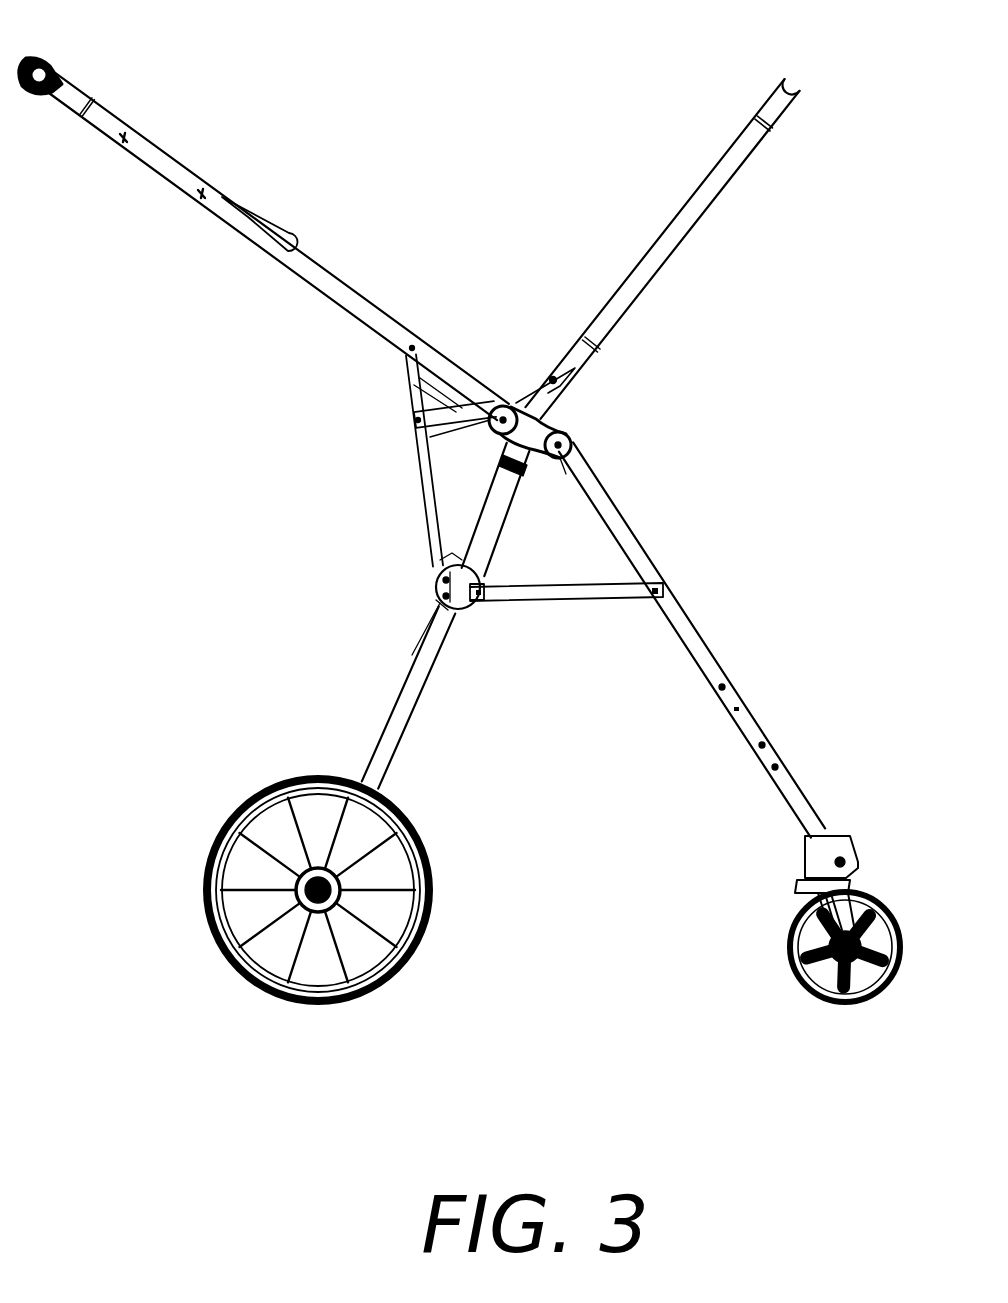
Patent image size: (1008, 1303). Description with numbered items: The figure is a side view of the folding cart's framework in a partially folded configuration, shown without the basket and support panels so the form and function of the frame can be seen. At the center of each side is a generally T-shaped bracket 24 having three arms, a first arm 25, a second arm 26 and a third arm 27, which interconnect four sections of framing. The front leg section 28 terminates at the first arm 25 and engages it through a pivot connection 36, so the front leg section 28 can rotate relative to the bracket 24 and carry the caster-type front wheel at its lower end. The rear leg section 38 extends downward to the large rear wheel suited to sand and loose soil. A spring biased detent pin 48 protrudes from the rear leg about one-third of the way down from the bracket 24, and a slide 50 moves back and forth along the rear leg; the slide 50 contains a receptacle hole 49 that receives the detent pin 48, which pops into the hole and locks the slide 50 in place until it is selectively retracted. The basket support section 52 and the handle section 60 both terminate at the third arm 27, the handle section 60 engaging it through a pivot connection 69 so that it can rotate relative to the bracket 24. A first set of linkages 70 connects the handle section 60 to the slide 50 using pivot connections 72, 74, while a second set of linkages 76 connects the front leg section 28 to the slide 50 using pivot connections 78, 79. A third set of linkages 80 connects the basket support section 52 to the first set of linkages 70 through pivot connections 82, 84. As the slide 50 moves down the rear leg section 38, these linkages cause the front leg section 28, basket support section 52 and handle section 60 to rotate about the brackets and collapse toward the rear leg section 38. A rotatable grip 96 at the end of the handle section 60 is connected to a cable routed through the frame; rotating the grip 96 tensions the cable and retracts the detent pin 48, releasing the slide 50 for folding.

The T-shaped bracket 24 is at (543, 418).
The first arm 25 is at (572, 442).
The second arm 26 is at (527, 485).
The third arm 27 is at (502, 404).
The front leg section 28 is at (763, 728).
The pivot connection 36 is at (552, 467).
The rear leg section 38 is at (387, 750).
The spring biased detent pin 48 is at (430, 585).
The receptacle hole 49 is at (436, 613).
The slide 50 is at (417, 647).
The basket support section 52 is at (685, 232).
The handle section 60 is at (270, 258).
The pivot connection 69 is at (430, 437).
The first set of linkages 70 is at (427, 512).
The pivot connection 72 is at (412, 345).
The pivot connection 74 is at (450, 553).
The second set of linkages 76 is at (580, 597).
The pivot connection 78 is at (480, 607).
The pivot connection 79 is at (663, 583).
The third set of linkages 80 is at (420, 380).
The pivot connection 82 is at (416, 417).
The pivot connection 84 is at (552, 378).
The rotatable grip 96 is at (45, 56).